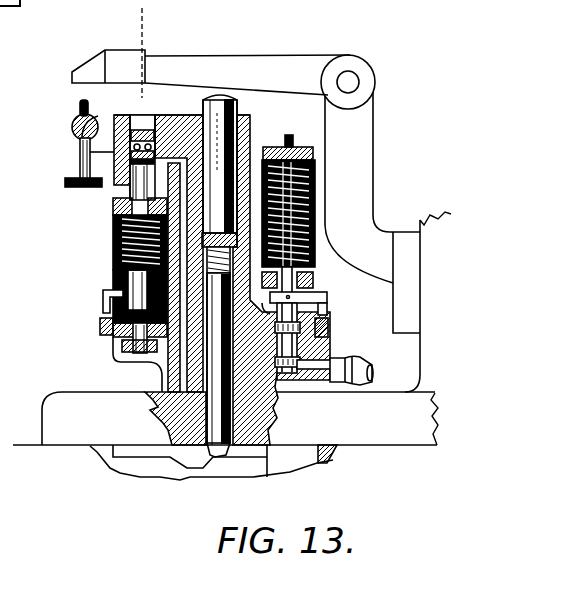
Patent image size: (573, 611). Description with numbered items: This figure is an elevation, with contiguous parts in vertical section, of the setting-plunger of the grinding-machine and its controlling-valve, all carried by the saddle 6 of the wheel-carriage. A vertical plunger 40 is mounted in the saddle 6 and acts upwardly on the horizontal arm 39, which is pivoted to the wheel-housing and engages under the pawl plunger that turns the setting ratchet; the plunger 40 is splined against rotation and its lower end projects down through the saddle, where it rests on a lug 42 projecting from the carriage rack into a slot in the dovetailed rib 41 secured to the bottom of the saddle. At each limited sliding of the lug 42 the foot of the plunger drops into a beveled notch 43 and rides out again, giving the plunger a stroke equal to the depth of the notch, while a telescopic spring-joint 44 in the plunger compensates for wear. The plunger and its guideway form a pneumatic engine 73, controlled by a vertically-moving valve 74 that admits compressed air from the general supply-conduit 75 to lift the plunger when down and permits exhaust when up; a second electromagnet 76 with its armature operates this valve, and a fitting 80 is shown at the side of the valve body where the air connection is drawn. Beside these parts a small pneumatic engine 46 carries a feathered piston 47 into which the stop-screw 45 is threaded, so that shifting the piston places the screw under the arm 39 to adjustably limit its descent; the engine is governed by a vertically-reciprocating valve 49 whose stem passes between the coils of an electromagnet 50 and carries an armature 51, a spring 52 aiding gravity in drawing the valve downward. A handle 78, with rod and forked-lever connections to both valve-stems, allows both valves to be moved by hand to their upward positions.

The saddle of the wheel-carriage 6 is at (78, 413).
The horizontal arm 39 is at (217, 64).
The vertical plunger 40 is at (238, 101).
The dovetailed rib 41 is at (333, 454).
The lug 42 is at (252, 465).
The beveled notch 43 is at (190, 470).
The telescopic spring-joint 44 is at (185, 350).
The stop-screw 45 is at (82, 166).
The pneumatic engine 46 is at (65, 127).
The piston 47 is at (78, 125).
The vertically-reciprocating valve 49 is at (147, 133).
The electromagnet 50 is at (113, 273).
The armature 51 is at (133, 355).
The spring 52 is at (113, 237).
The pneumatic engine 73 is at (277, 395).
The vertically-moving valve 74 is at (320, 308).
The general supply-conduit 75 is at (150, 405).
The second electromagnet 76 is at (320, 226).
The handle 78 is at (100, 328).
The fitting 80 is at (383, 357).